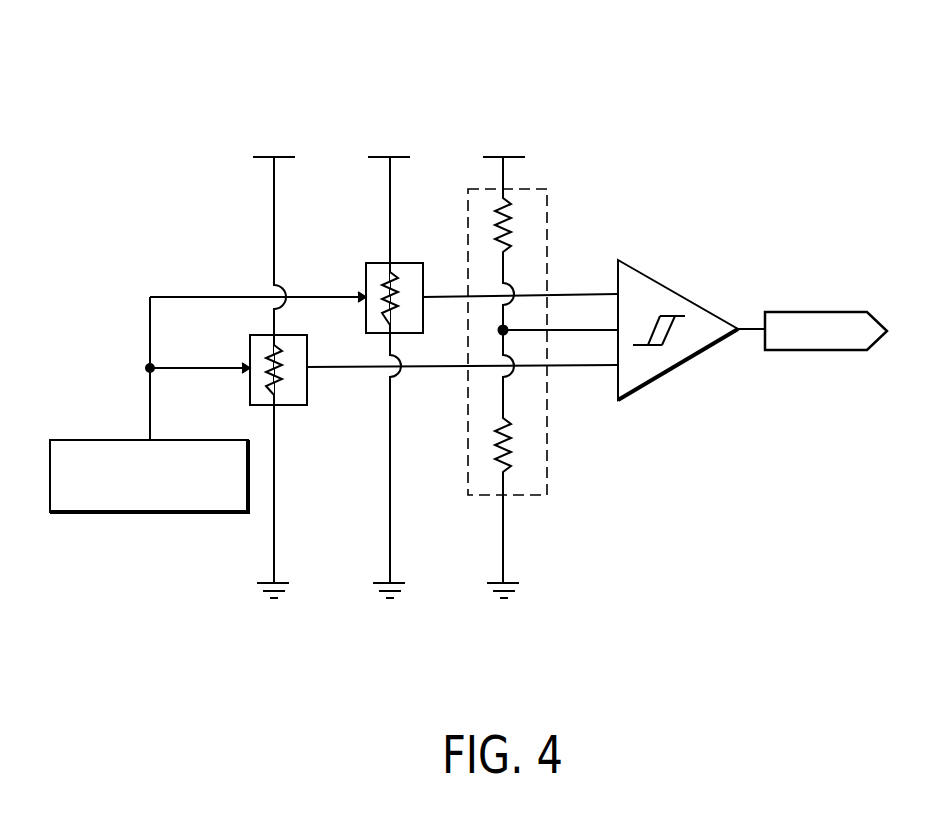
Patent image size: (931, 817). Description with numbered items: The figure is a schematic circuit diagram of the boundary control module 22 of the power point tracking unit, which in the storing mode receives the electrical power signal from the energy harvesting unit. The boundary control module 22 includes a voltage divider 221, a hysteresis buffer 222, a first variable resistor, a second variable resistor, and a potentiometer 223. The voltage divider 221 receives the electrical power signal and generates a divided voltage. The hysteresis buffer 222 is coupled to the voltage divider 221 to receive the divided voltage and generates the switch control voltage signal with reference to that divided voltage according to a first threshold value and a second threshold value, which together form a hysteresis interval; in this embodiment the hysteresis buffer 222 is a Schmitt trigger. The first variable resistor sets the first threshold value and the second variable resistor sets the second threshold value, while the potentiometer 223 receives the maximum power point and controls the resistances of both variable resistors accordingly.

The boundary control module 22 is at (652, 105).
The voltage divider 221 is at (547, 237).
The hysteresis buffer 222 is at (657, 282).
The potentiometer 223 is at (112, 438).